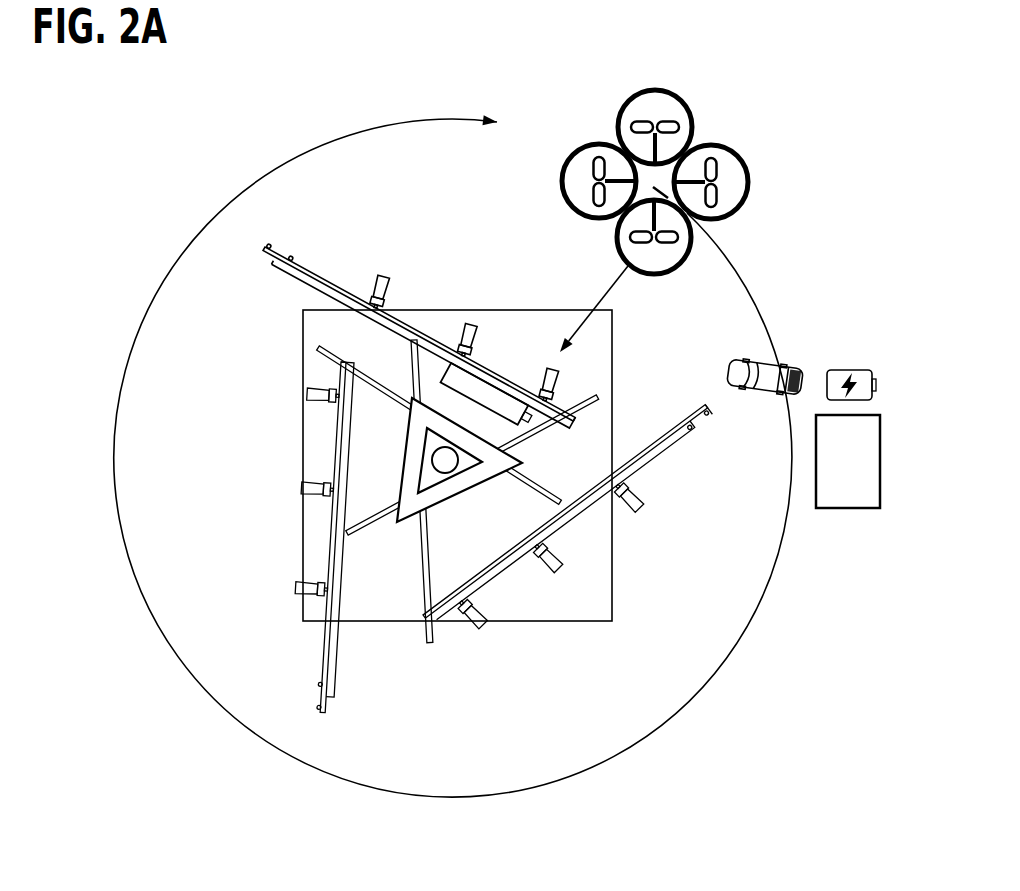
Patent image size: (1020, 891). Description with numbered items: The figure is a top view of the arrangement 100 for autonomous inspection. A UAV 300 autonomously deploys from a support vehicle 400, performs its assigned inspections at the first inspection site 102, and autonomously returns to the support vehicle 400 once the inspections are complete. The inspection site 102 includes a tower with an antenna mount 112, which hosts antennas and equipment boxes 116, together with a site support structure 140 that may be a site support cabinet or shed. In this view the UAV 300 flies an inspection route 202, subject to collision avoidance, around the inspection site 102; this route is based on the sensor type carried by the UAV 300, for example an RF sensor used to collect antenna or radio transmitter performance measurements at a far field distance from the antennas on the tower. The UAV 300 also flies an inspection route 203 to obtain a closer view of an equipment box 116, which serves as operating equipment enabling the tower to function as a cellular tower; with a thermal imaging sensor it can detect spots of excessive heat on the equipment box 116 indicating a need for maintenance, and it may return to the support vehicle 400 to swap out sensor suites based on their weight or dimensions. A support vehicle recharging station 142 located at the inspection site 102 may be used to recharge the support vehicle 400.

The arrangement 100 is at (804, 692).
The first inspection site 102 is at (602, 613).
The antenna mount 112 is at (300, 277).
The equipment box 116 is at (455, 380).
The site support structure 140 is at (868, 493).
The support vehicle recharging station 142 is at (845, 370).
The inspection route 202 is at (207, 227).
The inspection route 203 is at (605, 290).
The UAV 300 is at (727, 120).
The support vehicle 400 is at (778, 393).